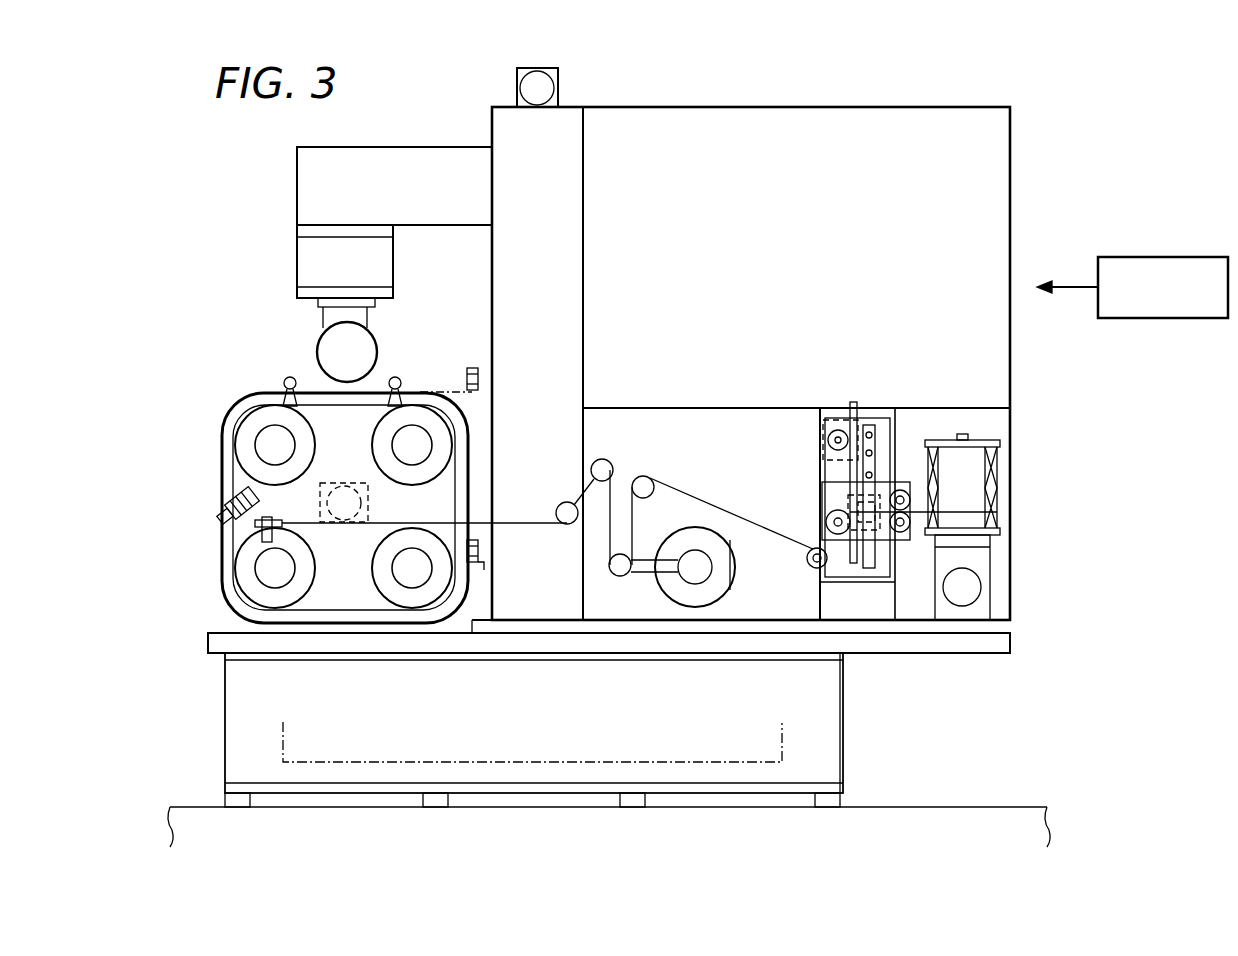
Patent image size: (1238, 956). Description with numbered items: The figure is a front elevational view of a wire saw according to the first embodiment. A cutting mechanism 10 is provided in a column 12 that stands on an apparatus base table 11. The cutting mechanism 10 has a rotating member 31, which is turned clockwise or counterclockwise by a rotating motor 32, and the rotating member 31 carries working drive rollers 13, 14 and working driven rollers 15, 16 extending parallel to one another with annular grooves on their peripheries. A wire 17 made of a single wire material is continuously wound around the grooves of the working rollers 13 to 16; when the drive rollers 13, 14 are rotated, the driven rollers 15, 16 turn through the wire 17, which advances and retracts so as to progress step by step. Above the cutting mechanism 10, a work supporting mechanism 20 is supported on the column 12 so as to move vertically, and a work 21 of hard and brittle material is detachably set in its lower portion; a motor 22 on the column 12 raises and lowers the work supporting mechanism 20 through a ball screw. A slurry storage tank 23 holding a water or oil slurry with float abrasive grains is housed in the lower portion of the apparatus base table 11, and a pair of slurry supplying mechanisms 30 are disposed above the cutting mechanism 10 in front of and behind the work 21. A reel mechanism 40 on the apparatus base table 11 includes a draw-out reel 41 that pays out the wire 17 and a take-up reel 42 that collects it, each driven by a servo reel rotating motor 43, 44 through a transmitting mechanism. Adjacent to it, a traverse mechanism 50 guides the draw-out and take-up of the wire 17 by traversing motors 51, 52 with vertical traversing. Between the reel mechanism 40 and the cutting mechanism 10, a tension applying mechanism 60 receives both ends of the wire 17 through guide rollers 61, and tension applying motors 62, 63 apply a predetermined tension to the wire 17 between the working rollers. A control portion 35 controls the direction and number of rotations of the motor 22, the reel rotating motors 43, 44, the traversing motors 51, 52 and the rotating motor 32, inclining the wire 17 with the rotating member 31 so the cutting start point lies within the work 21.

The cutting mechanism 10 is at (308, 470).
The apparatus base table 11 is at (208, 633).
The column 12 is at (567, 243).
The working drive roller 13 is at (372, 572).
The working drive roller 14 is at (242, 568).
The working driven roller 15 is at (312, 452).
The working driven roller 16 is at (397, 483).
The wire 17 is at (352, 406).
The work supporting mechanism 20 is at (297, 184).
The work 21 is at (362, 336).
The motor for ascending and descending the work 22 is at (558, 75).
The slurry storage tank 23 is at (283, 728).
The slurry supplying mechanism 30 is at (286, 380).
The rotating member 31 is at (222, 455).
The rotating motor 32 is at (345, 523).
The control portion 35 is at (1207, 257).
The reel mechanism 40 is at (1019, 523).
The draw-out reel 41 is at (1017, 571).
The take-up reel 42 is at (1003, 530).
The reel rotating motor 43 is at (1015, 615).
The reel rotating motor 44 is at (985, 600).
The traverse mechanism 50 is at (855, 471).
The traversing motor 51 is at (825, 435).
The traversing motor 52 is at (823, 440).
The tension applying mechanism 60 is at (700, 527).
The guide roller 61 is at (262, 530).
The tension applying motor 62 is at (719, 569).
The tension applying motor 63 is at (754, 516).